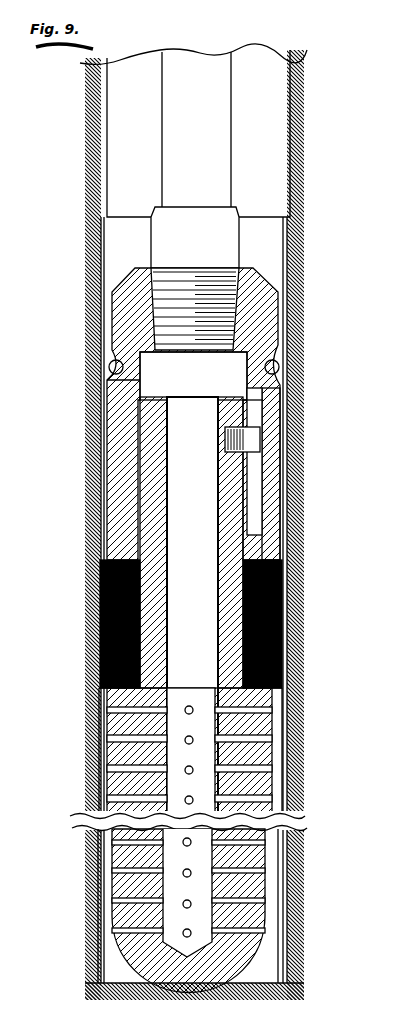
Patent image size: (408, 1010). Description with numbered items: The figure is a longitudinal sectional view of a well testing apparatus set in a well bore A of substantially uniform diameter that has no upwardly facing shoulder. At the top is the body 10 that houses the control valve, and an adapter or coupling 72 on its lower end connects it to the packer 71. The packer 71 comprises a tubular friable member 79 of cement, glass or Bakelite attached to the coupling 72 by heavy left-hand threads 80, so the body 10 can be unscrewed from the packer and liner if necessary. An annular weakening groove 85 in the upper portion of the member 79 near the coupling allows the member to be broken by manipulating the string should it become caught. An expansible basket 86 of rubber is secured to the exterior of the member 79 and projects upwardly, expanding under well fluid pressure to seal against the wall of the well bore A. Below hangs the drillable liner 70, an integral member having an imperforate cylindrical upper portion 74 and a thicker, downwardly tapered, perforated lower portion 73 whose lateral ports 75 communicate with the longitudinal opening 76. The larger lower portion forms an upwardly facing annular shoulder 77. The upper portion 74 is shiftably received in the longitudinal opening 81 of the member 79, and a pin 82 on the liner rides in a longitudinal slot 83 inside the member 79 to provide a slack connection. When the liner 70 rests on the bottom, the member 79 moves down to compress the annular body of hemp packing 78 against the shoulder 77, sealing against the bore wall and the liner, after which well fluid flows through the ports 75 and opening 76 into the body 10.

The body 10 is at (222, 110).
The well bore A is at (286, 138).
The adapter or coupling 72 is at (199, 215).
The heavy left-hand threads 80 is at (188, 296).
The expansible basket 86 is at (99, 268).
The annular weakening groove 85 is at (284, 367).
The longitudinal opening 81 is at (133, 386).
The tubular friable member 79 is at (113, 431).
The longitudinal slot 83 is at (265, 409).
The projection or pin 82 is at (252, 440).
The packer 71 is at (280, 485).
The imperforate upper portion 74 is at (250, 529).
The body of packing 78 is at (100, 604).
The upwardly facing annular shoulder 77 is at (284, 682).
The longitudinal opening 76 is at (191, 606).
The drillable liner 70 is at (219, 751).
The lateral ports 75 is at (284, 771).
The perforated lower portion 73 is at (262, 862).